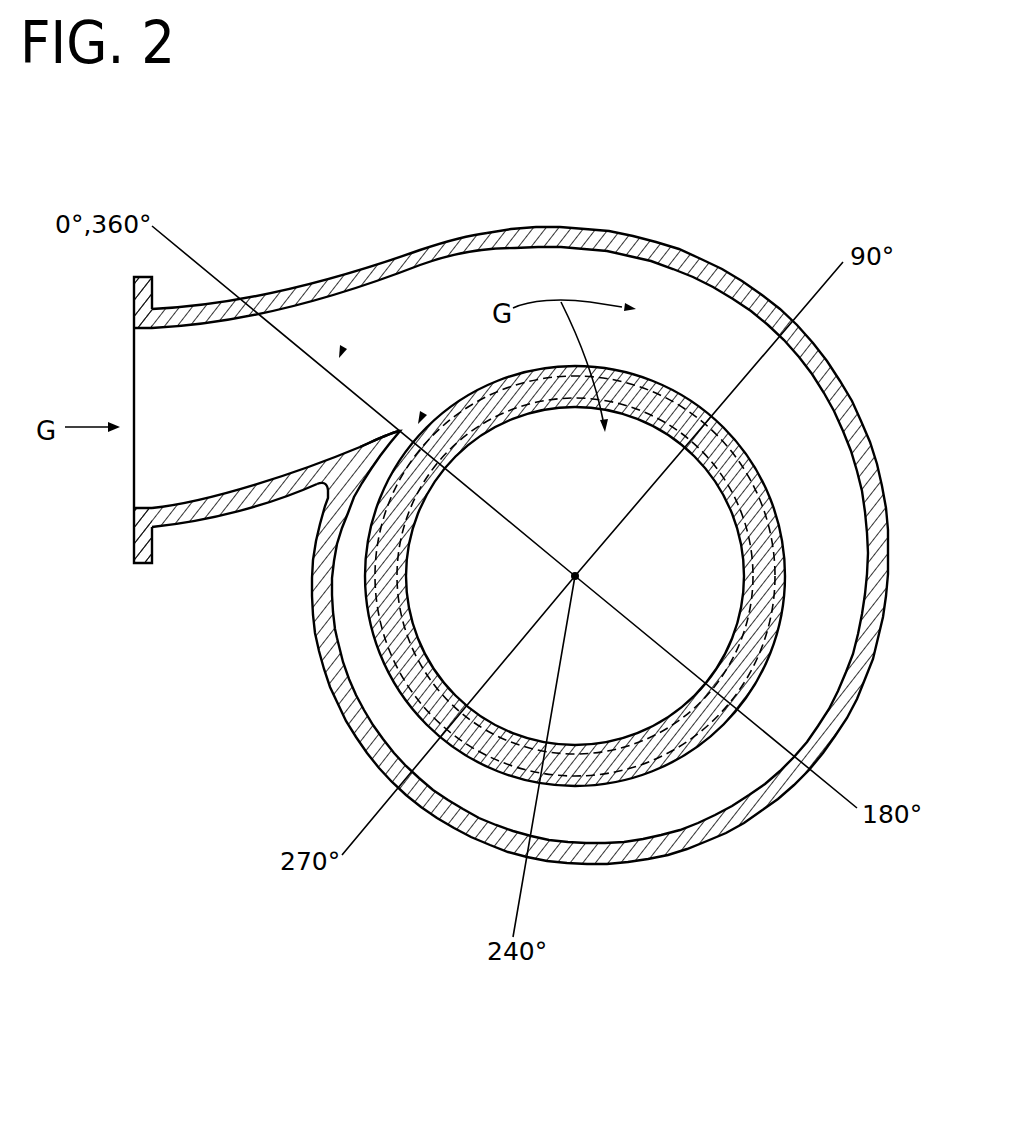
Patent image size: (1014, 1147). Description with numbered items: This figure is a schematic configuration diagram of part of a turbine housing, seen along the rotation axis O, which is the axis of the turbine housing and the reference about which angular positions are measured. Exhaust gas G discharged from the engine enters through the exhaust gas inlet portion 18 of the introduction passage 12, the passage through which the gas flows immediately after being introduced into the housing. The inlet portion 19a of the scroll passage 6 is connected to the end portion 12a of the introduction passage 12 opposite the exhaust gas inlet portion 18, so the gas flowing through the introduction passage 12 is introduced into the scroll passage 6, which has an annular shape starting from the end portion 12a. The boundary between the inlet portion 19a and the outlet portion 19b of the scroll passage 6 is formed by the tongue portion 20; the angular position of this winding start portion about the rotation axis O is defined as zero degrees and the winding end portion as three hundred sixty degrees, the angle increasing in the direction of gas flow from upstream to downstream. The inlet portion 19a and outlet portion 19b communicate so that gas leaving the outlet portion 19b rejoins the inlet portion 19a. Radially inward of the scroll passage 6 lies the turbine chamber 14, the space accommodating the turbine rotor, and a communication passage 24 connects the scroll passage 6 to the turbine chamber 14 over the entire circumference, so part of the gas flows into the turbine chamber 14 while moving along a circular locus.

The scroll passage 6 is at (730, 270).
The introduction passage 12 is at (225, 517).
The end portion of the introduction passage 12a is at (287, 320).
The turbine chamber 14 is at (572, 745).
The exhaust gas inlet portion 18 is at (137, 487).
The inlet portion of the scroll passage 19a is at (341, 355).
The outlet portion of the scroll passage 19b is at (424, 413).
The tongue portion 20 is at (340, 450).
The communication passage 24 is at (772, 487).
The rotation axis O is at (583, 577).